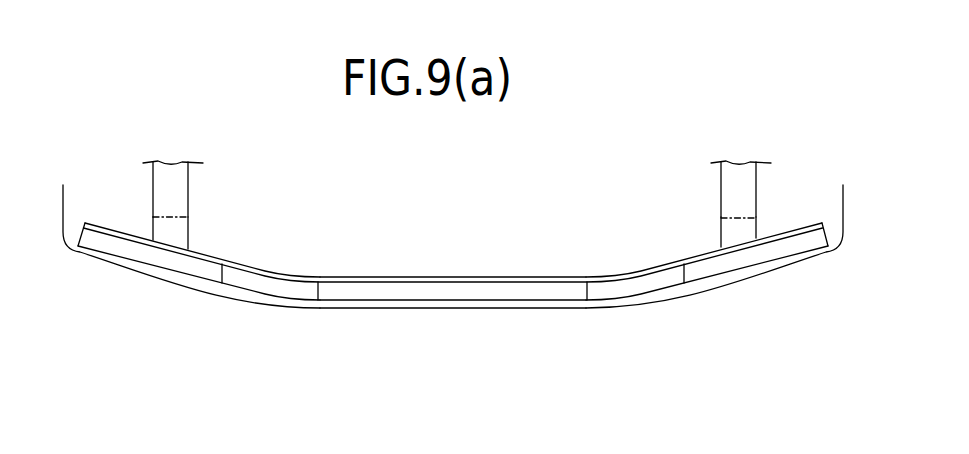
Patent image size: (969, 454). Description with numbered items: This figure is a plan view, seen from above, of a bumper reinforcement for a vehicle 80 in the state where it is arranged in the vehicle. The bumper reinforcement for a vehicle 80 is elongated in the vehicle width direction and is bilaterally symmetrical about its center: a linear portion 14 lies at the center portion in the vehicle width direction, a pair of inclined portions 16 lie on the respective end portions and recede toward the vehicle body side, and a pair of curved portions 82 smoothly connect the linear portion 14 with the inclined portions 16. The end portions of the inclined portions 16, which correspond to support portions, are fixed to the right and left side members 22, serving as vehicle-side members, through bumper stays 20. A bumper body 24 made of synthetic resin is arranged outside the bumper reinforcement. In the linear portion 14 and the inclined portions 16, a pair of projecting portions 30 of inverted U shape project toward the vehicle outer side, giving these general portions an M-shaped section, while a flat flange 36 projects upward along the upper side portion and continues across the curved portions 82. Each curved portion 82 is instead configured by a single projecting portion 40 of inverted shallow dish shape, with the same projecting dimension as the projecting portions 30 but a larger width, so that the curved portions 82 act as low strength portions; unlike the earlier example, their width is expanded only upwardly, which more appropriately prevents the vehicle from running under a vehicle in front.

The linear portion 14 is at (438, 312).
The inclined portions 16 is at (131, 288).
The bumper stays 20 is at (178, 235).
The side members 22 is at (163, 190).
The bumper body 24 is at (561, 310).
The projecting portion 30 is at (157, 258).
The flange 36 is at (436, 277).
The projecting portion 40 is at (247, 283).
The bumper reinforcement for a vehicle 80 is at (302, 372).
The curved portions 82 is at (284, 259).